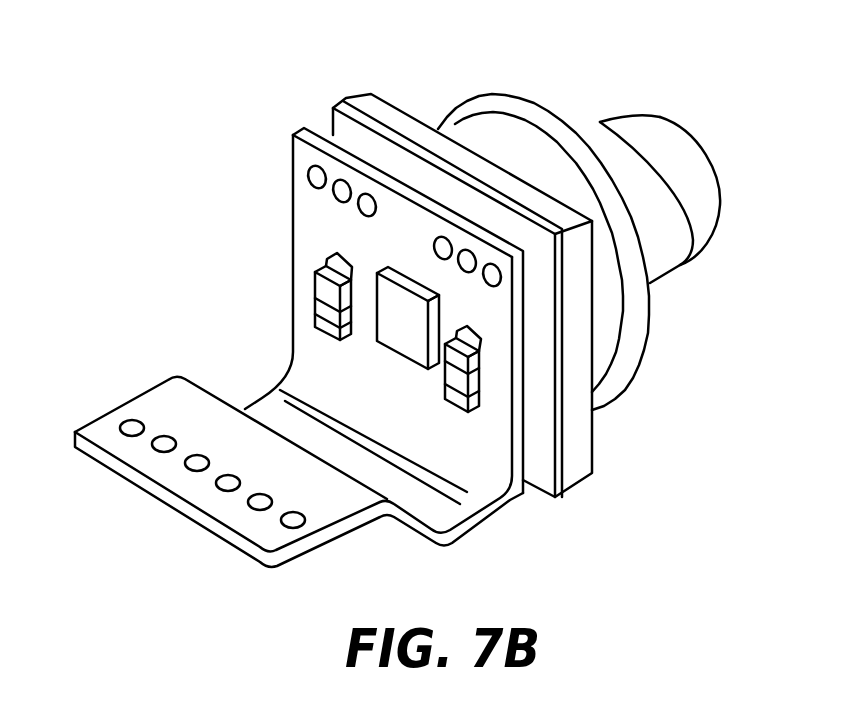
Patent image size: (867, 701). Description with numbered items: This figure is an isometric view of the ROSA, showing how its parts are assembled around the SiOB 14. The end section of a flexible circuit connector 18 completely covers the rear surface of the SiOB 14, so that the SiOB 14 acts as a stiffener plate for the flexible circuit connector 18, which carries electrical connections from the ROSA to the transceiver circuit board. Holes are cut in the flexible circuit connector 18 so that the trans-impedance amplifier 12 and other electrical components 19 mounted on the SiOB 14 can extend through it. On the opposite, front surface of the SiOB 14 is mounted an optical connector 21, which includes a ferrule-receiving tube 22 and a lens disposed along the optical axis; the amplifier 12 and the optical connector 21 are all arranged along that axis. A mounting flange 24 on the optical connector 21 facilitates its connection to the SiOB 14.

The trans-impedance amplifier 12 is at (403, 338).
The SiOB 14 is at (350, 137).
The flexible circuit connector 18 is at (157, 403).
The electrical components 19 is at (317, 270).
The optical connector 21 is at (648, 438).
The ferrule-receiving tube 22 is at (683, 145).
The mounting flange 24 is at (376, 108).